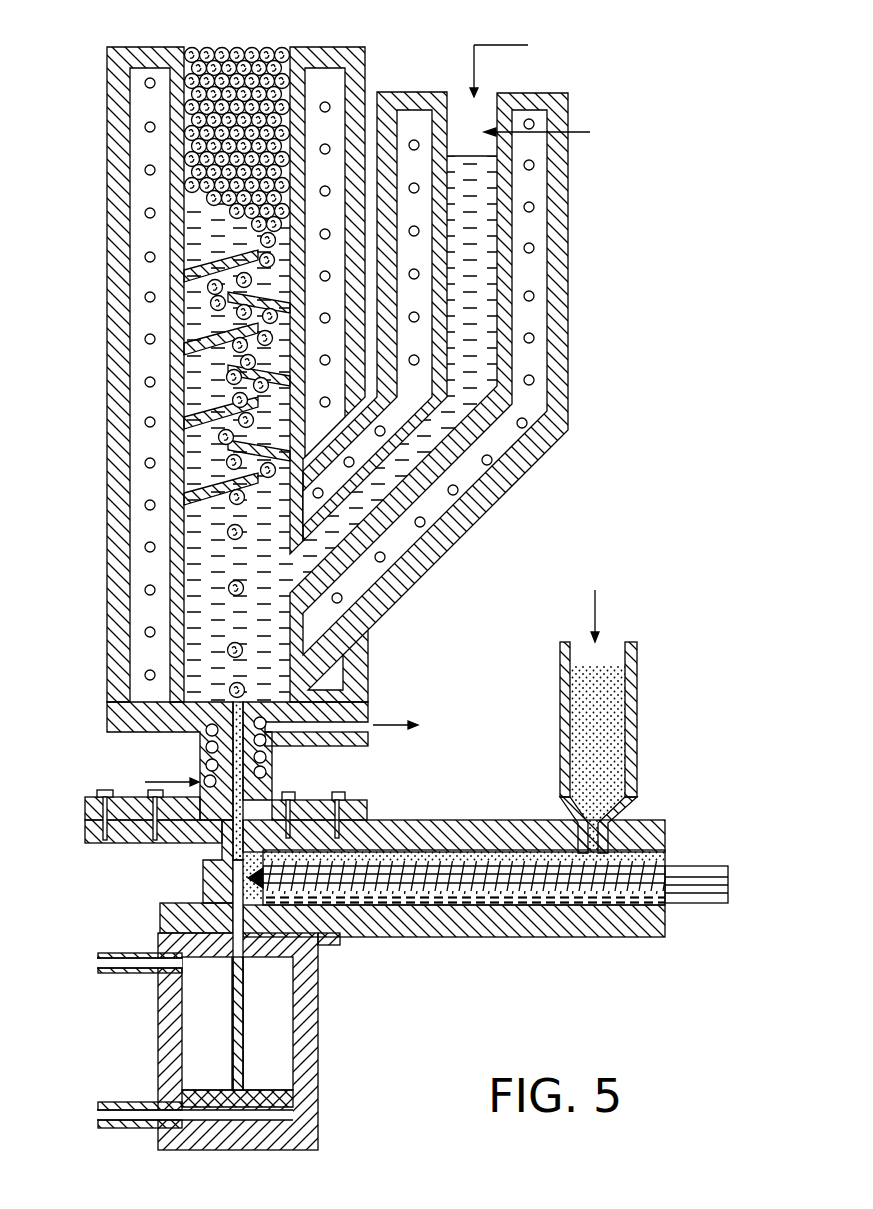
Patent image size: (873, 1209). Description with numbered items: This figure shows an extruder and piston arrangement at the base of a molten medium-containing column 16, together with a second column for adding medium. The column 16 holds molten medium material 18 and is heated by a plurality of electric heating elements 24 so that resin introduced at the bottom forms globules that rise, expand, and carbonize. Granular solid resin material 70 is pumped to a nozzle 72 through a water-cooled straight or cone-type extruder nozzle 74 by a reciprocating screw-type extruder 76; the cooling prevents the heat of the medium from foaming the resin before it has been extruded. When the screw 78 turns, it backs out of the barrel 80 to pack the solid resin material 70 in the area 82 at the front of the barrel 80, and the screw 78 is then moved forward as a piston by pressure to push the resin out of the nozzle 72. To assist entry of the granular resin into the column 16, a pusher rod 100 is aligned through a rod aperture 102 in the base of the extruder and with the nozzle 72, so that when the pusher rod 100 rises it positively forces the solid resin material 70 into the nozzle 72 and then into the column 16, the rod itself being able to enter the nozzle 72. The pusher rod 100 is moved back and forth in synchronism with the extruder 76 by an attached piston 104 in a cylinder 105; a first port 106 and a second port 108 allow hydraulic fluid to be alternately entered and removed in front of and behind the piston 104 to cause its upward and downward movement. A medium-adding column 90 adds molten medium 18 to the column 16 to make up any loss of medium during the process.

The molten medium-containing column 16 is at (212, 402).
The molten medium material 18 is at (451, 426).
The electric heating elements 24 is at (146, 461).
The solid resin material 70 is at (232, 771).
The nozzle 72 is at (232, 731).
The water-cooled extruder nozzle 74 is at (259, 758).
The reciprocating screw-type extruder 76 is at (452, 890).
The screw 78 is at (338, 940).
The barrel 80 is at (558, 886).
The area in front of the barrel 82 is at (232, 860).
The medium-adding column 90 is at (484, 363).
The pusher rod 100 is at (232, 982).
The rod aperture 102 is at (226, 915).
The piston 104 is at (202, 1096).
The cylinder 105 is at (198, 1035).
The first port 106 is at (105, 1111).
The second port 108 is at (105, 963).